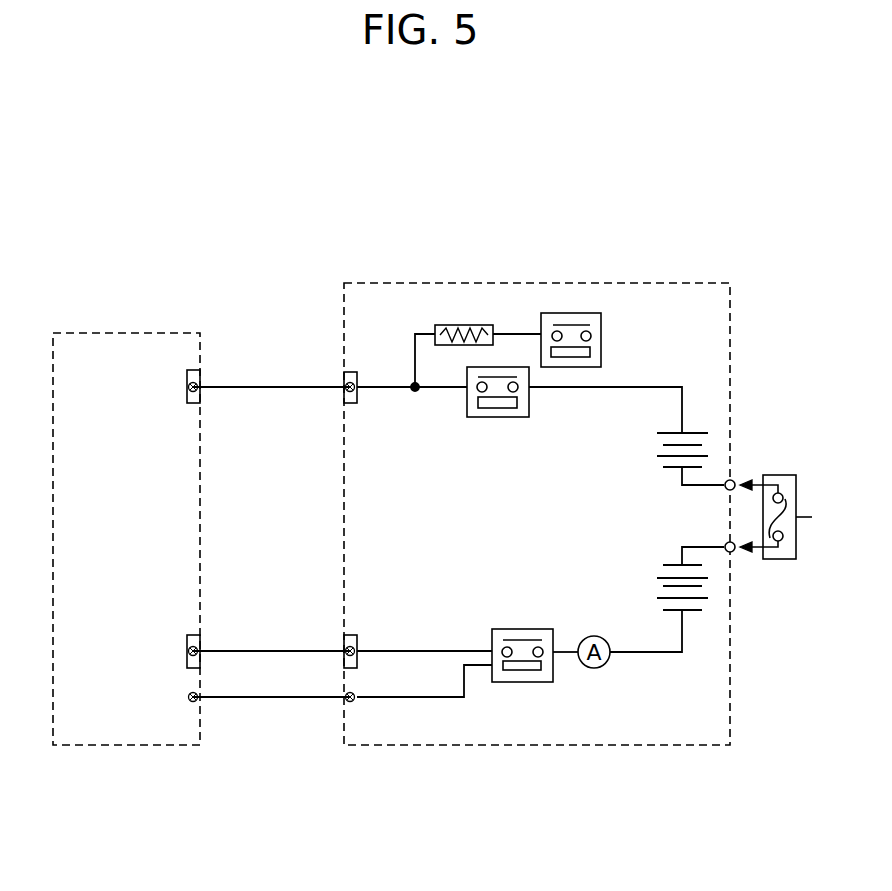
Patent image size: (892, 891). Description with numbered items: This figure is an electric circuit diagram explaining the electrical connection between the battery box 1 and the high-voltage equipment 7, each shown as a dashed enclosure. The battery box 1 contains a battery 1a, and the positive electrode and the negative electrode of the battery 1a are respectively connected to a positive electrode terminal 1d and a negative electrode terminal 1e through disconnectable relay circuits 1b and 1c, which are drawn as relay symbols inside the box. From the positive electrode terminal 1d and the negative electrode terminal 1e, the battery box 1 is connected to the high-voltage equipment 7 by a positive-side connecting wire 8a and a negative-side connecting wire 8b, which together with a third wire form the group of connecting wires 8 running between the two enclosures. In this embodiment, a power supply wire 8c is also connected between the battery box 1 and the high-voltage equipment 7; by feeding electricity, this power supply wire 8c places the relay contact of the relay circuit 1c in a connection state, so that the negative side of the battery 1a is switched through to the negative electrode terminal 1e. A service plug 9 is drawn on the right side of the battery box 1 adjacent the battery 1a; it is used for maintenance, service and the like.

The battery box 1 is at (587, 283).
The battery 1a is at (702, 420).
The relay circuit 1b is at (498, 419).
The relay circuit 1c is at (522, 627).
The positive electrode terminal 1d is at (348, 372).
The negative electrode terminal 1e is at (348, 636).
The high-voltage equipment 7 is at (136, 333).
The connecting wires 8 is at (271, 594).
The positive-side connecting wire 8a is at (246, 385).
The negative-side connecting wire 8b is at (246, 649).
The power supply wire 8c is at (246, 700).
The service plug 9 is at (784, 475).